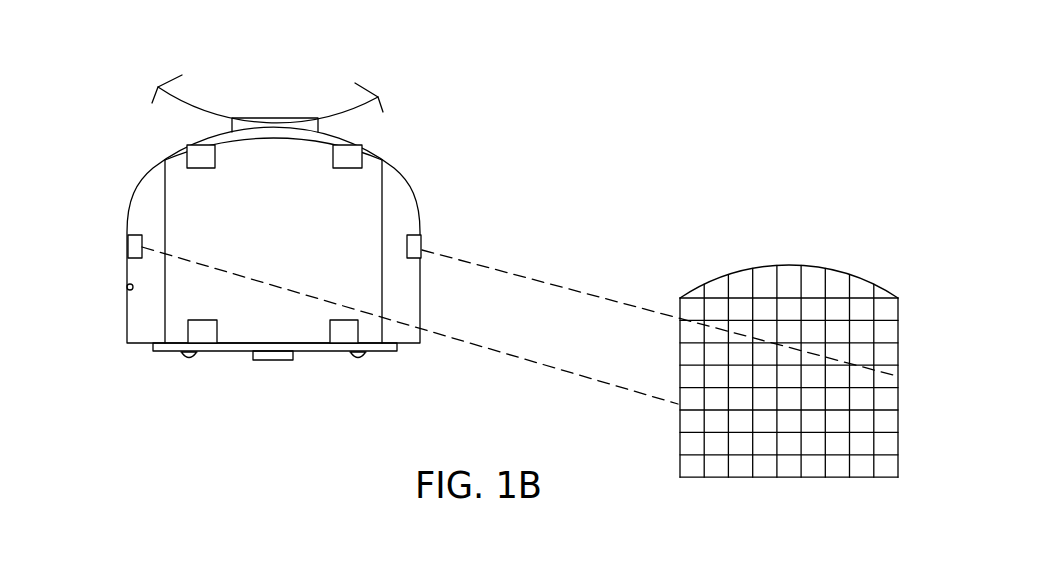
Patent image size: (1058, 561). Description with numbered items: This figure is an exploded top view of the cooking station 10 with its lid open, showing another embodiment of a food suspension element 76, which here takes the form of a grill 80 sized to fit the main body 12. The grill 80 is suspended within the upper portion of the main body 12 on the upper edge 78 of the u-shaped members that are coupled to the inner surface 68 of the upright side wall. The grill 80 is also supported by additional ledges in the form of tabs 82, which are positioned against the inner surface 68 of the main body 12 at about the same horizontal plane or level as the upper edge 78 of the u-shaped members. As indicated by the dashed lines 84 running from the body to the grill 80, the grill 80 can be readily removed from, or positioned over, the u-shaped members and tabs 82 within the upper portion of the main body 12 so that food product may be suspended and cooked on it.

The cooking station 10 is at (90, 85).
The main body 12 is at (402, 175).
The inner surface 68 is at (215, 157).
The food suspension element 76 is at (890, 277).
The upper edge 78 is at (185, 164).
The grill 80 is at (710, 278).
The tabs 82 is at (127, 245).
The dashed lines 84 is at (558, 288).